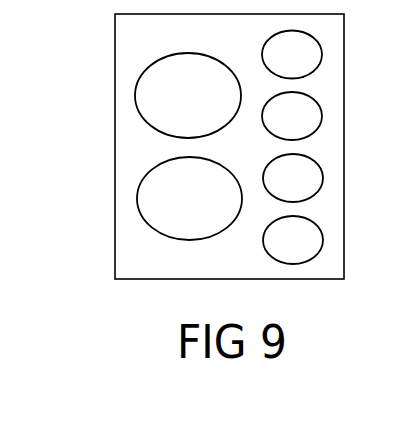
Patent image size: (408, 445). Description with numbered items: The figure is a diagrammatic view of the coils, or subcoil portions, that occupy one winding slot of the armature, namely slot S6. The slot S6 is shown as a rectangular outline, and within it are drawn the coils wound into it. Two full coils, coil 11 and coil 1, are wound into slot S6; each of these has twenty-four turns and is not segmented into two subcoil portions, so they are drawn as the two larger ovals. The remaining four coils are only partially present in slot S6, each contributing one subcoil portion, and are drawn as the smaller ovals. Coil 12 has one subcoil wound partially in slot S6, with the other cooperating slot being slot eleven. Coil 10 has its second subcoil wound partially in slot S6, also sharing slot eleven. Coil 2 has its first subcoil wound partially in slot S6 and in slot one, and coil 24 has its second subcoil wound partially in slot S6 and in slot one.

The slot S6 is at (115, 70).
The coil 11 is at (188, 95).
The coil 1 is at (189, 198).
The coil 12 is at (292, 55).
The coil 10 is at (292, 116).
The coil 2 is at (293, 178).
The coil 24 is at (293, 240).